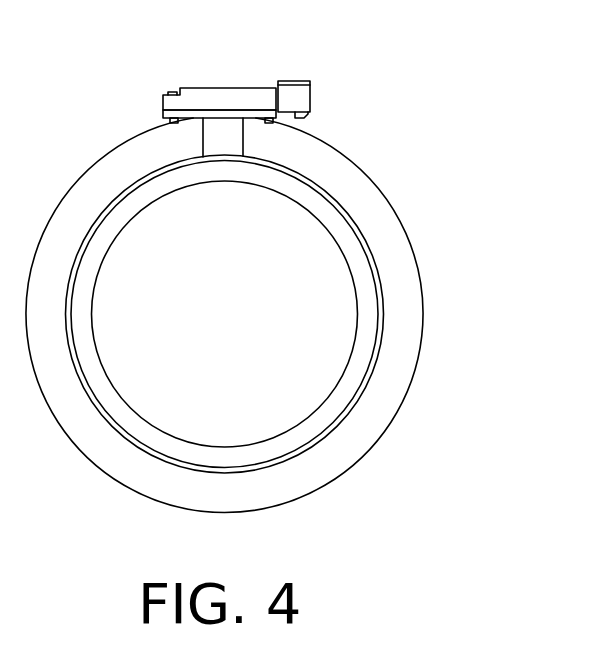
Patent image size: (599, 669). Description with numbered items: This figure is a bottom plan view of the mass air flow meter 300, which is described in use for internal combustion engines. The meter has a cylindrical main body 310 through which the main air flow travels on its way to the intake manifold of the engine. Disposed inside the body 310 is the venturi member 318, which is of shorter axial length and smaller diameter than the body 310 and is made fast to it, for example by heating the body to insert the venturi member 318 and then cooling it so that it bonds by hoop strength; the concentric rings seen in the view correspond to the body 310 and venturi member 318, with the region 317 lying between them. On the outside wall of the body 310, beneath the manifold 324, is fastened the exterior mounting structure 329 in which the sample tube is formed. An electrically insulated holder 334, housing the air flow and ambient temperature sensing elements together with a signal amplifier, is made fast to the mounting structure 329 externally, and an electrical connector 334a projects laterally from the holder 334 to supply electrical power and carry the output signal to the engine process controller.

The mass air flow meter 300 is at (265, 284).
The main body 310 is at (325, 200).
The inner ring lip 317 is at (83, 350).
The venturi member 318 is at (348, 342).
The manifold 324 is at (392, 470).
The exterior mounting structure 329 is at (203, 140).
The electrically insulated holder 334 is at (247, 88).
The electrical connector 334a is at (295, 97).